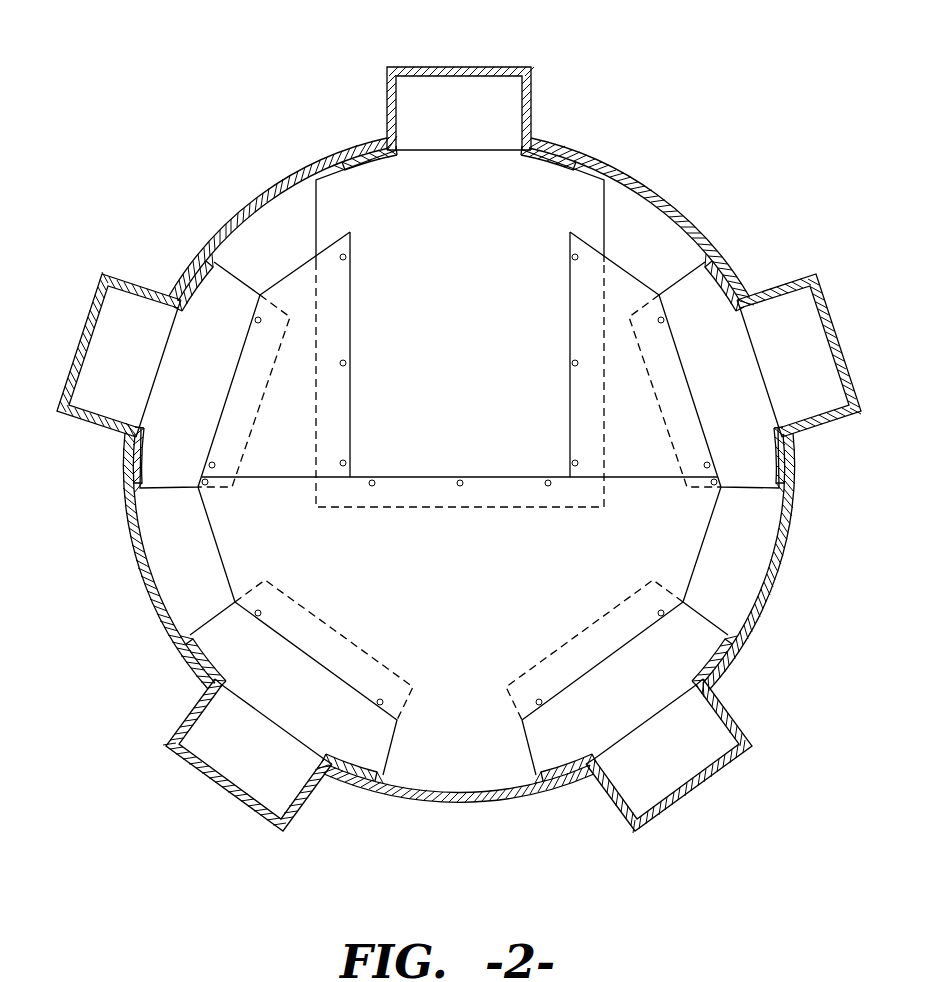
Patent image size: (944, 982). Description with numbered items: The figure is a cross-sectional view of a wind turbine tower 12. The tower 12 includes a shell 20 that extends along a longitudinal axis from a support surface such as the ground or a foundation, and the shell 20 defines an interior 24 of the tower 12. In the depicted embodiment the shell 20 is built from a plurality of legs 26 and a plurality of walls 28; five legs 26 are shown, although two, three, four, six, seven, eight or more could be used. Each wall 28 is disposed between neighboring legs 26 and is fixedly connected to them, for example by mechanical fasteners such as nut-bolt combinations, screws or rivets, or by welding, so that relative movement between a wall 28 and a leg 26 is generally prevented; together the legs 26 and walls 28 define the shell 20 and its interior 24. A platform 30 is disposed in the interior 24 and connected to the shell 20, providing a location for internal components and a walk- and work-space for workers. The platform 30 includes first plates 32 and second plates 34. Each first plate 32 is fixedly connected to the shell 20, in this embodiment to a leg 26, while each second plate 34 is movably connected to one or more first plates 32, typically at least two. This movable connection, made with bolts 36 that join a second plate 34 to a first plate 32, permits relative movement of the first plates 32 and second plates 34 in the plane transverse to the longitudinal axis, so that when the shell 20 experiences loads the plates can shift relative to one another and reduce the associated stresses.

The tower 12 is at (718, 84).
The shell 20 is at (254, 161).
The interior 24 is at (477, 411).
The legs 26 is at (93, 303).
The walls 28 is at (316, 163).
The platform 30 is at (664, 266).
The first plates 32 is at (520, 182).
The second plates 34 is at (615, 285).
The bolts 36 is at (347, 258).